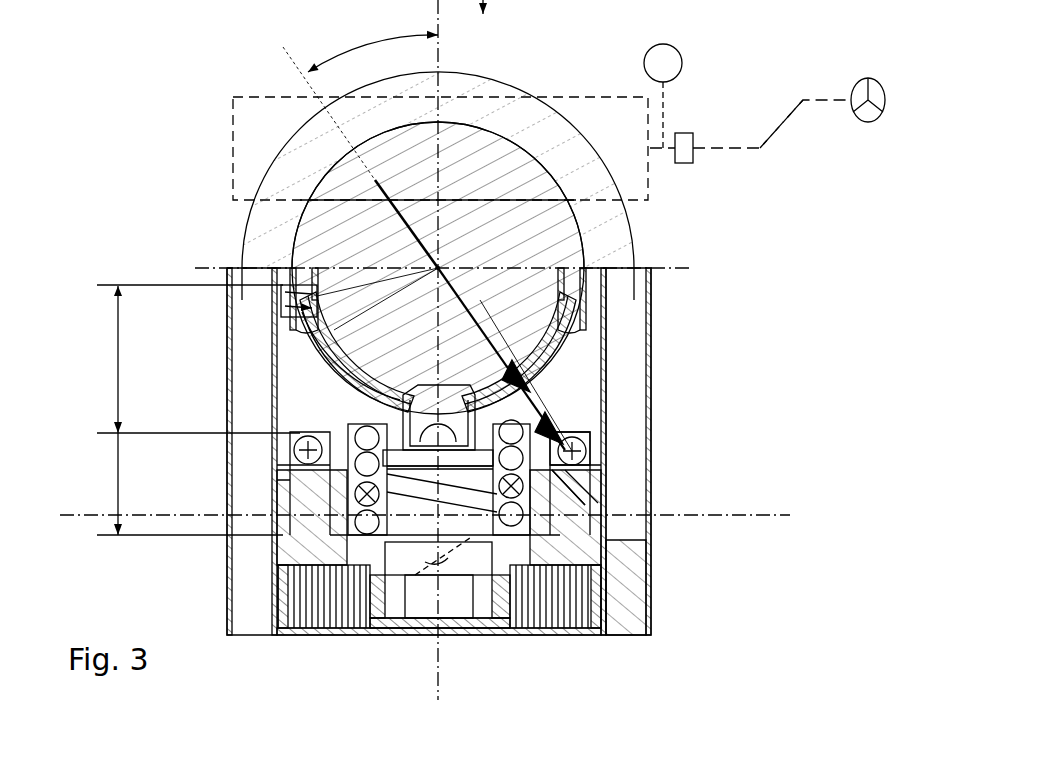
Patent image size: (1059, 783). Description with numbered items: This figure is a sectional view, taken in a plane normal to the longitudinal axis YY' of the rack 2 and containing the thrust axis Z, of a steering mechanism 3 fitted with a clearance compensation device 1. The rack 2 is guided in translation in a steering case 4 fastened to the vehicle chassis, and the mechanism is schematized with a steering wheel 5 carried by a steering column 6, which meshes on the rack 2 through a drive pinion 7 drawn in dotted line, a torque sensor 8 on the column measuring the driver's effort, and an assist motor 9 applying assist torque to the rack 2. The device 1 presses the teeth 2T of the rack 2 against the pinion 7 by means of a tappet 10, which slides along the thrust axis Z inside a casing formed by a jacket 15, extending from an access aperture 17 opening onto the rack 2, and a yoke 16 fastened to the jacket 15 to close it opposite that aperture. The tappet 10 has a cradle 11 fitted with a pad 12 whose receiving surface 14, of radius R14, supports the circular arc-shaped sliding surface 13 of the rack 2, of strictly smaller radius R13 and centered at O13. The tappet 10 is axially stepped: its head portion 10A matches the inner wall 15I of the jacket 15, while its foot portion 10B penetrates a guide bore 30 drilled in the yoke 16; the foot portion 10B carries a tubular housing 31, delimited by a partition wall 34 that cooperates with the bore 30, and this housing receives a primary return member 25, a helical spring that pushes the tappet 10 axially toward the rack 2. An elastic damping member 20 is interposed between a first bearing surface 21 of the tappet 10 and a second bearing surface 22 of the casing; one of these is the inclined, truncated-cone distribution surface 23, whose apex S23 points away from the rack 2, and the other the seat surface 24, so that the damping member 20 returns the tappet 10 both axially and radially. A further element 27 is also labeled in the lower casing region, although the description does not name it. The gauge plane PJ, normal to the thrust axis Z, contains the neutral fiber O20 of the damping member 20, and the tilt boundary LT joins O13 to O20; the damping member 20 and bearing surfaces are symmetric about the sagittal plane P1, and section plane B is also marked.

The clearance compensation device 1 is at (790, 378).
The rack 2 is at (540, 232).
The teeth of the rack 2T is at (452, 200).
The steering mechanism 3 is at (812, 150).
The steering case 4 is at (496, 98).
The steering wheel 5 is at (880, 85).
The steering column 6 is at (795, 115).
The drive pinion 7 is at (628, 97).
The torque sensor 8 is at (690, 158).
The assist motor 9 is at (650, 48).
The tappet 10 is at (592, 340).
The head portion 10A is at (118, 358).
The foot portion 10B is at (118, 481).
The cradle 11 is at (336, 390).
The pad 12 is at (325, 322).
The sliding surface 13 is at (362, 340).
The receiving surface 14 is at (300, 298).
The jacket 15 is at (625, 412).
The inner wall of the jacket 15I is at (612, 395).
The yoke 16 is at (625, 600).
The access aperture 17 is at (585, 262).
The elastic damping member 20 is at (590, 452).
The first bearing surface 21 is at (598, 378).
The second bearing surface 22 is at (592, 470).
The distribution surface 23 is at (570, 448).
The seat surface 24 is at (568, 487).
The primary return member 25 is at (365, 535).
The hub flange 27 is at (560, 500).
The guide bore 30 is at (575, 530).
The tubular housing 31 is at (362, 487).
The partition wall 34 is at (362, 528).
The sagittal plane P1 is at (438, 28).
The tilt boundary LT is at (318, 90).
The center of the arc of circle generating the sliding surface O13 is at (440, 266).
The neutral fiber of the damping member O20 is at (300, 452).
The gauge plane PJ is at (172, 453).
The radius of the sliding surface R13 is at (333, 330).
The radius of the receiving surface R14 is at (310, 312).
The apex of the distribution surface S23 is at (457, 550).
The longitudinal axis of the rack YY' is at (428, 237).
The thrust axis Z is at (207, 0).
The section line B is at (73, 514).